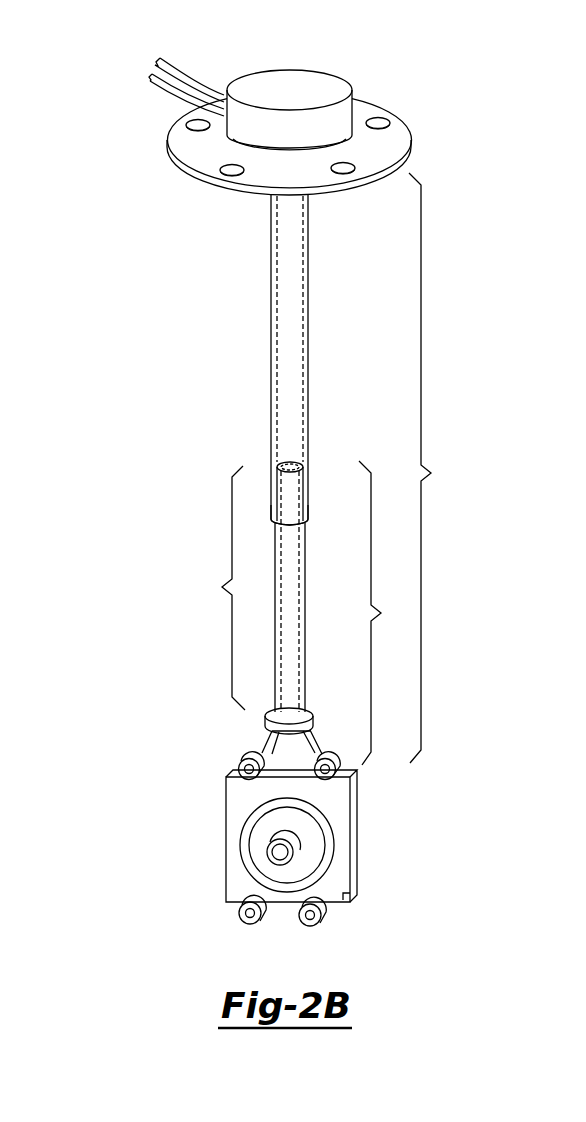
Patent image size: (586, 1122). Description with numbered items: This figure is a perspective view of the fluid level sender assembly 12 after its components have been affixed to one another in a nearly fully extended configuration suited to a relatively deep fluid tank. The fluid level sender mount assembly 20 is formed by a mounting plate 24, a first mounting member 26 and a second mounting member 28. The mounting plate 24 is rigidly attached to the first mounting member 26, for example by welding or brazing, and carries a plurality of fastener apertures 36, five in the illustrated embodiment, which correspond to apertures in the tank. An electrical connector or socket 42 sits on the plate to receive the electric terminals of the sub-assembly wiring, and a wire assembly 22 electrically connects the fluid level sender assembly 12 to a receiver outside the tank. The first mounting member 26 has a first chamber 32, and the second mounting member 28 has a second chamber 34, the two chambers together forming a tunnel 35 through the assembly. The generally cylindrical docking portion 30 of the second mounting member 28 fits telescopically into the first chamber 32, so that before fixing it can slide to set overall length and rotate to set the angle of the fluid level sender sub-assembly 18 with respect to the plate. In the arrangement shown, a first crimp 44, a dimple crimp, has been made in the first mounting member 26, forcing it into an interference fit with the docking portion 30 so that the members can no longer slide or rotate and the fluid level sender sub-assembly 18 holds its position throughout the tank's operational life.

The fluid level sender assembly 12 is at (96, 181).
The fluid level sender sub-assembly 18 is at (358, 840).
The fluid level sender mount assembly 20 is at (433, 468).
The wire assembly 22 is at (201, 90).
The mounting plate 24 is at (392, 145).
The first mounting member 26 is at (271, 250).
The second mounting member 28 is at (383, 613).
The docking portion 30 is at (217, 588).
The first chamber 32 is at (289, 355).
The second chamber 34 is at (290, 648).
The tunnel 35 is at (290, 498).
The fastener apertures 36 is at (378, 121).
The electrical connector or socket 42 is at (325, 71).
The first crimp 44 is at (270, 490).